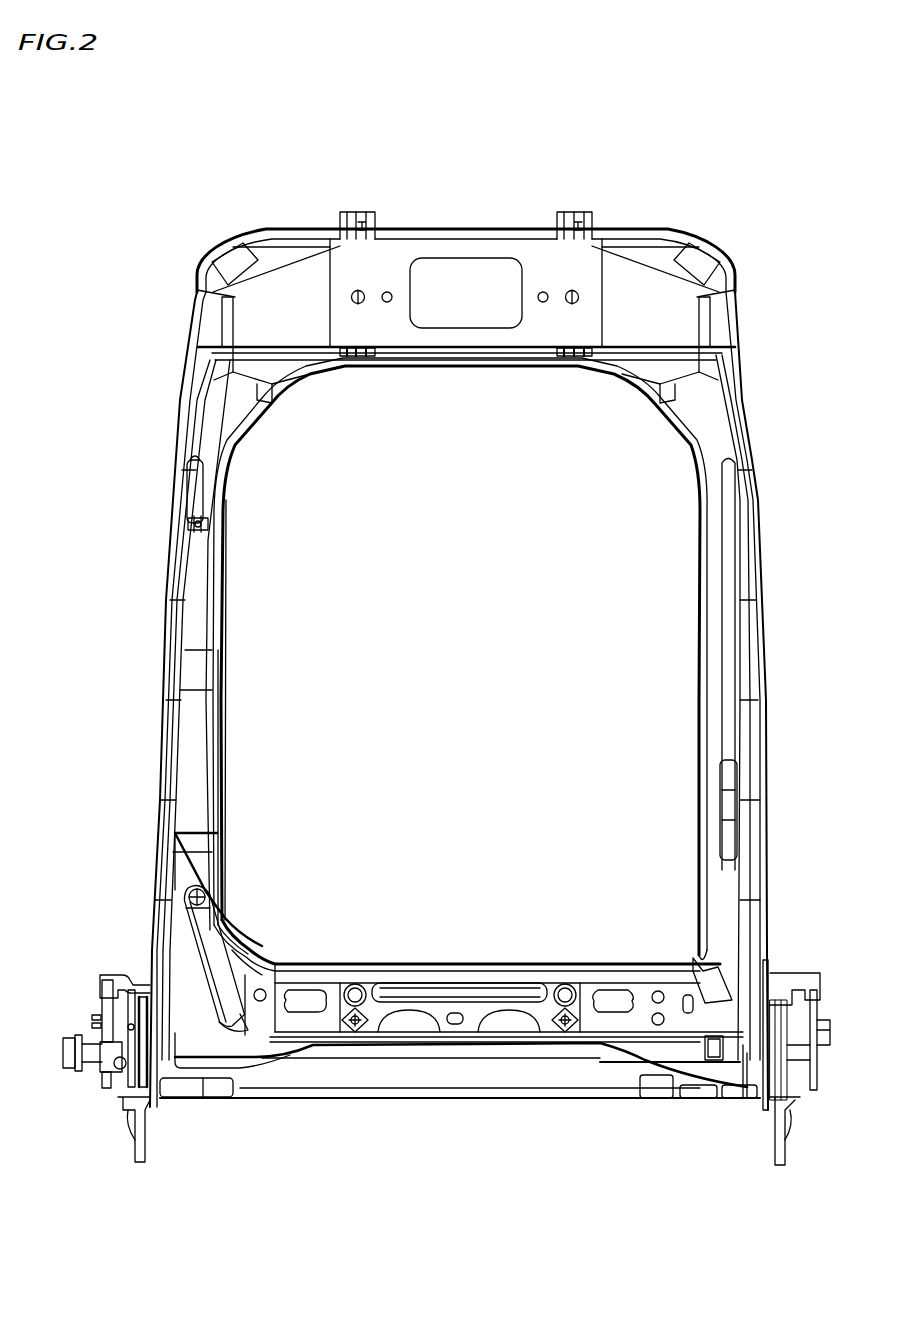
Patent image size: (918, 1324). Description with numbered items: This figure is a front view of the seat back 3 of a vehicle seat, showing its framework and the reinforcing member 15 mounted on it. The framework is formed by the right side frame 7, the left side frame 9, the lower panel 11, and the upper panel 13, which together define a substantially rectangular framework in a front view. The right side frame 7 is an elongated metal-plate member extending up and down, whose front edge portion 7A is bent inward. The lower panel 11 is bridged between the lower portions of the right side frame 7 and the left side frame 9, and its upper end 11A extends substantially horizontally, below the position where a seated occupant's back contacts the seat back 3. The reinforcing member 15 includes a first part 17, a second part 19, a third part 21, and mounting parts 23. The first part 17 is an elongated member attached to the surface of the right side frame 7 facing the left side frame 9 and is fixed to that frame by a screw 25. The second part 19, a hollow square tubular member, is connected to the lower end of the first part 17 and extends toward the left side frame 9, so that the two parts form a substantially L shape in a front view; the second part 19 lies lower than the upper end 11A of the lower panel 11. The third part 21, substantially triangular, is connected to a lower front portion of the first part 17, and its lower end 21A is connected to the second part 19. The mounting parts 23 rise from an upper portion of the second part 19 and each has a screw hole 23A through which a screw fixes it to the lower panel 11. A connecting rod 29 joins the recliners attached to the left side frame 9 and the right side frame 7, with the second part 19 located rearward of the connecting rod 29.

The seat back 3 is at (221, 237).
The upper panel 13 is at (484, 256).
The right side frame 7 is at (188, 500).
The front edge portion 7A is at (183, 618).
The screw 25 is at (207, 526).
The left side frame 9 is at (757, 518).
The reinforcing member 15 is at (347, 703).
The first part 17 is at (222, 706).
The second part 19 is at (300, 962).
The lower panel 11 is at (462, 968).
The upper end 11A is at (605, 972).
The mounting part 23 is at (363, 985).
The screw hole 23A is at (350, 985).
The third part 21 is at (205, 1008).
The lower end 21A is at (250, 1030).
The connecting rod 29 is at (283, 1050).